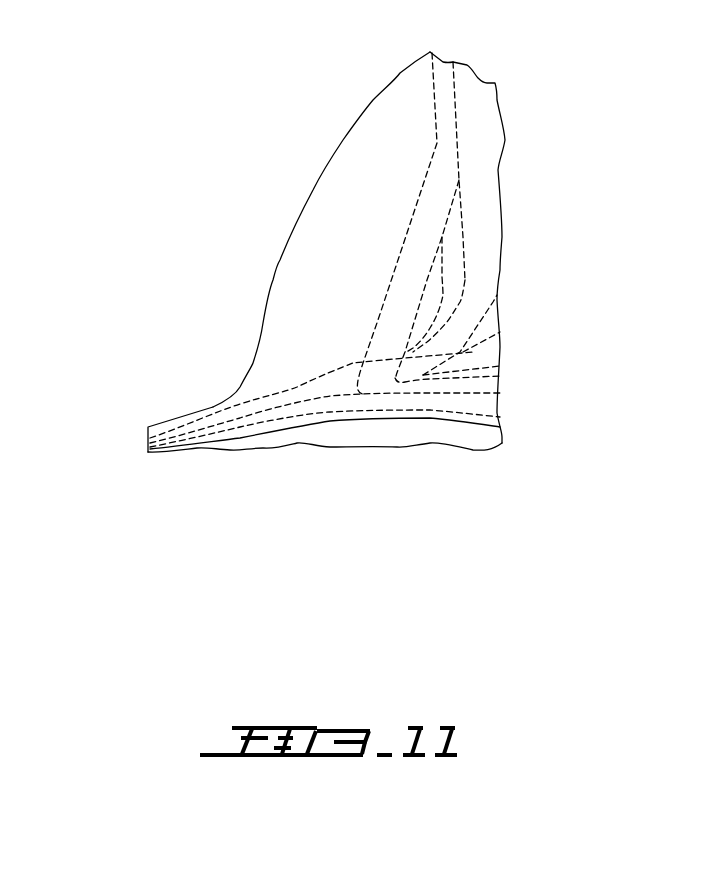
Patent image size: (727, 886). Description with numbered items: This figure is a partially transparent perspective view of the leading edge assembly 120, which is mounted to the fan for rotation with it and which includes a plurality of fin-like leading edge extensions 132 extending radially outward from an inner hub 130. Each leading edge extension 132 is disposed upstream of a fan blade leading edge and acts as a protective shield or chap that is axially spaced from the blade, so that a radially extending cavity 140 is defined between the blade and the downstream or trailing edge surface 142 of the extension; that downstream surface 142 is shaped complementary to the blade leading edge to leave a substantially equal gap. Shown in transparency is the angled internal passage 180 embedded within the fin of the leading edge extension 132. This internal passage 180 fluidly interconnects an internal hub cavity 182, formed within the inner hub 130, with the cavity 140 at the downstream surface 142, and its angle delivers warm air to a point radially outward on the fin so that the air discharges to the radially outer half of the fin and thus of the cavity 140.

The leading edge assembly 120 is at (136, 404).
The inner hub 130 is at (203, 431).
The leading edge extension 132 is at (313, 297).
The cavity 140 is at (469, 115).
The downstream surface 142 is at (485, 203).
The internal passage 180 is at (413, 184).
The internal hub cavity 182 is at (381, 403).